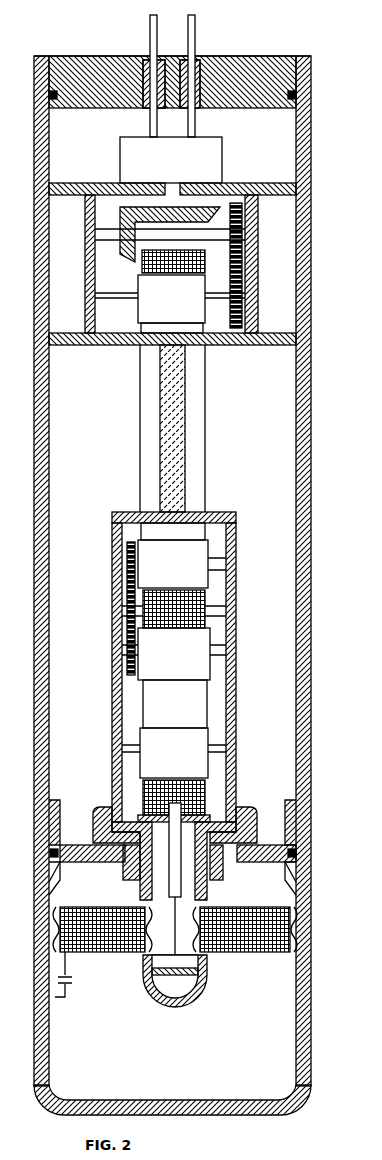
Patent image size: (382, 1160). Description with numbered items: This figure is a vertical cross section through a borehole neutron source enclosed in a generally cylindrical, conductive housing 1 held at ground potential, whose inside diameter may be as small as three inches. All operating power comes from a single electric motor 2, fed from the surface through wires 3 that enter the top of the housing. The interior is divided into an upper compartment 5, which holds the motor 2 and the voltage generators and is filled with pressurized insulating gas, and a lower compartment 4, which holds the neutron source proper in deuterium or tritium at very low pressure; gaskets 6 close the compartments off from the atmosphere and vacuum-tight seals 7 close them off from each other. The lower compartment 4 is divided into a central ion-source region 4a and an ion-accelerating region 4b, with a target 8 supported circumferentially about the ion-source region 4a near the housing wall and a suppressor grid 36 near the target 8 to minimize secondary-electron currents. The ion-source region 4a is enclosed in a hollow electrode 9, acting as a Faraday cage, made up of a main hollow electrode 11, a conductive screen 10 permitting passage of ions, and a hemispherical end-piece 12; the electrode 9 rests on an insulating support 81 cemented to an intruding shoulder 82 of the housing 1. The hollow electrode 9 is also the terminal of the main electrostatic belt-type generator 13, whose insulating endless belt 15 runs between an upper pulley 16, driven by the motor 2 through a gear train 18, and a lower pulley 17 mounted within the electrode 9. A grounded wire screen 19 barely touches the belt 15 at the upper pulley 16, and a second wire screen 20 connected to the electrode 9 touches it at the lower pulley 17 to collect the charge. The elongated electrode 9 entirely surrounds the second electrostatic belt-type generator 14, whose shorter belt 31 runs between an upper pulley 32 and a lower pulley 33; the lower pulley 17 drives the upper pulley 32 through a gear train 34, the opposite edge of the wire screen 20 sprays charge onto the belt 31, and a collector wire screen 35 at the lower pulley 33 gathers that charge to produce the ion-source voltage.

The housing 1 is at (36, 530).
The electric motor 2 is at (214, 167).
The wires 3 is at (150, 117).
The lower compartment 4 is at (60, 1024).
The ion-source region 4a is at (160, 940).
The ion-accelerating region 4b is at (105, 952).
The upper compartment 5 is at (278, 427).
The gaskets 6 is at (297, 96).
The vacuum-tight seals 7 is at (140, 820).
The target 8 is at (301, 918).
The hollow electrode 9 is at (290, 720).
The conductive mesh or screen 10 is at (205, 950).
The main hollow electrode 11 is at (227, 613).
The hemispherical end-piece 12 is at (168, 1004).
The main electrostatic belt-type generator 13 is at (270, 496).
The second electrostatic belt-type generator 14 is at (215, 711).
The endless belt 15 is at (198, 406).
The upper pulley 16 is at (200, 291).
The lower pulley 17 is at (195, 558).
The gear train 18 is at (278, 281).
The wire screen 19 is at (145, 262).
The second wire screen 20 is at (205, 600).
The belt 31 is at (148, 703).
The upper pulley 32 is at (205, 647).
The lower pulley 33 is at (200, 747).
The gear train 34 is at (118, 592).
The wire screen 35 is at (205, 801).
The suppressor grid 36 is at (309, 975).
The insulating support 81 is at (100, 807).
The intruding shoulder 82 is at (272, 863).